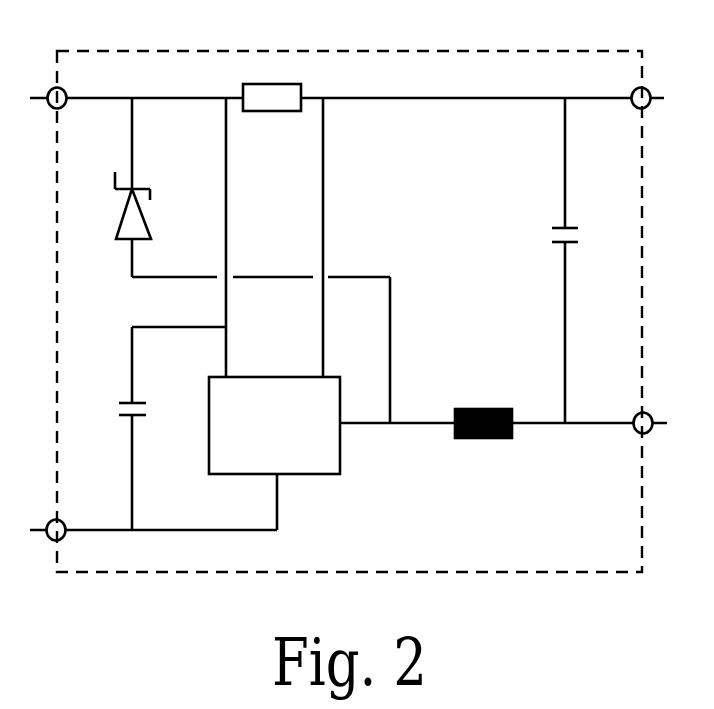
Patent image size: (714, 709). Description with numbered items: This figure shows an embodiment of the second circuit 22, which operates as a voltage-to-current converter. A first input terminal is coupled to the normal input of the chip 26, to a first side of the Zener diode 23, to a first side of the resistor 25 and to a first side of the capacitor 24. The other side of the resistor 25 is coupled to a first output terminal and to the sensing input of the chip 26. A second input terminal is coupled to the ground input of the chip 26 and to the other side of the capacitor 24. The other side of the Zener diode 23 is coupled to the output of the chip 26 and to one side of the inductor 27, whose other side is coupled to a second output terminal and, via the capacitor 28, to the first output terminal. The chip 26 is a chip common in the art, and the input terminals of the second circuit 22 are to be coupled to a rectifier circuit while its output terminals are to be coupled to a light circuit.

The second circuit 22 is at (349, 333).
The Zener diode 23 is at (109, 205).
The capacitor 24 is at (111, 411).
The resistor 25 is at (272, 118).
The chip 26 is at (274, 447).
The inductor 27 is at (483, 446).
The capacitor 28 is at (542, 240).